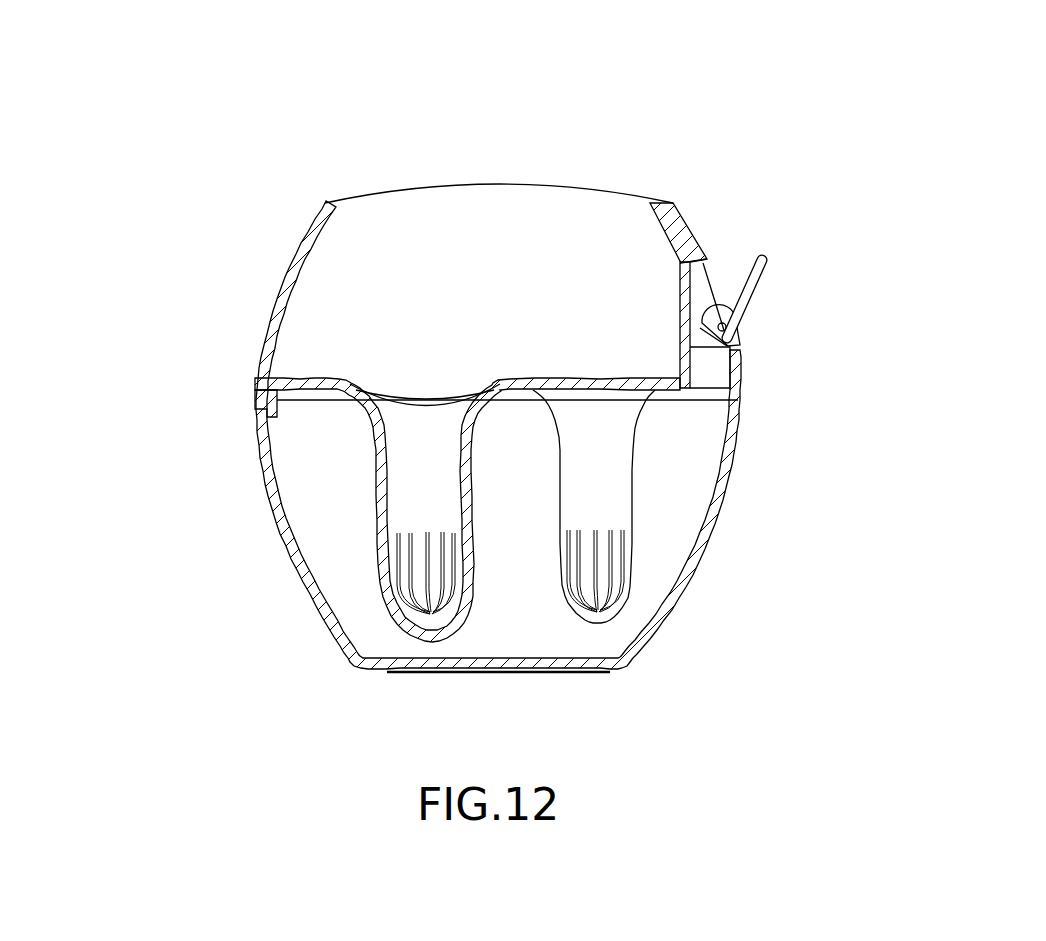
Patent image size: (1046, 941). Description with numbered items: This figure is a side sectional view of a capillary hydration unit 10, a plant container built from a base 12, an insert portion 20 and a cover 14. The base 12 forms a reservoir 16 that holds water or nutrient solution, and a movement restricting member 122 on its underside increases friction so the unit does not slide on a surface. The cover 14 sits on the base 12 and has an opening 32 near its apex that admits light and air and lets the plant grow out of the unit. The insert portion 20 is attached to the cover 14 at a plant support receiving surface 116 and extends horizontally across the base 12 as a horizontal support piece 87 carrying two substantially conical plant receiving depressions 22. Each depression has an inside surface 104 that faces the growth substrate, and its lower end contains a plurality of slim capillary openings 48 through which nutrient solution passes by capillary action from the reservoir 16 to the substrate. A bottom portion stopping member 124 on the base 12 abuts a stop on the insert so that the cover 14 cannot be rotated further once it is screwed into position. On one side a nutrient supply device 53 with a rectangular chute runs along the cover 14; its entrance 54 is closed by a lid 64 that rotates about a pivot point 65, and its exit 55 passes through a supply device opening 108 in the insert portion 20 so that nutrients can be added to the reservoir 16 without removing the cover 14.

The capillary hydration unit 10 is at (230, 90).
The base 12 is at (150, 593).
The cover 14 is at (163, 308).
The reservoir 16 is at (507, 598).
The insert portion 20 is at (667, 477).
The plant receiving depressions 22 is at (385, 558).
The opening 32 is at (510, 183).
The capillary openings 48 is at (403, 598).
The nutrient supply device 53 is at (727, 277).
The entrance 54 is at (693, 297).
The exit 55 is at (707, 372).
The lid 64 is at (753, 299).
The pivot point 65 is at (727, 328).
The horizontal support piece 87 is at (295, 382).
The inside surface 104 is at (380, 442).
The supply device opening 108 is at (718, 395).
The plant support receiving surface 116 is at (617, 383).
The movement restricting member 122 is at (592, 670).
The bottom portion stopping member 124 is at (270, 412).